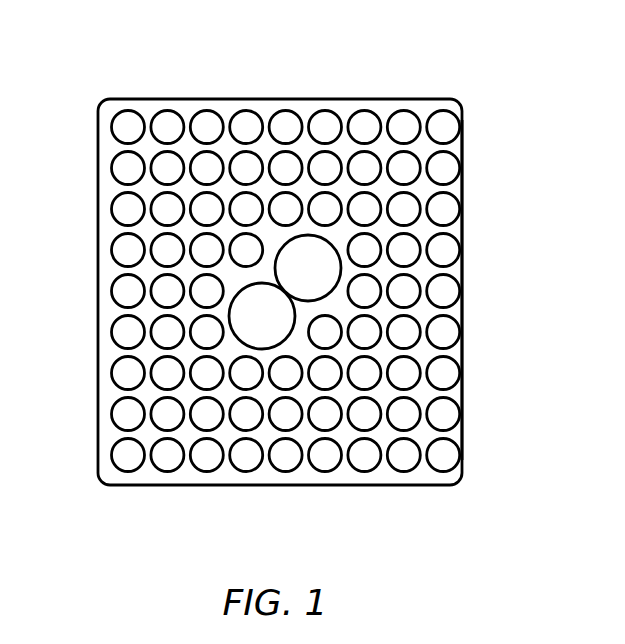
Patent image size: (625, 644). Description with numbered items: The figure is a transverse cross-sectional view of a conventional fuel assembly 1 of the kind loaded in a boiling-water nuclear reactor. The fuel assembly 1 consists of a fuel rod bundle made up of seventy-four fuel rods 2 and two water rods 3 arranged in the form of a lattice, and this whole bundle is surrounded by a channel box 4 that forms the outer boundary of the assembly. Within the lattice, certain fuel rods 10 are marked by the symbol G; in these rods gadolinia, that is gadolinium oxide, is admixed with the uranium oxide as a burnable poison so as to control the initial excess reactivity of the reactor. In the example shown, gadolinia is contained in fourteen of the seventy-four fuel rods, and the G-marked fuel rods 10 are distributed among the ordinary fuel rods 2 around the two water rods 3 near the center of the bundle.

The fuel assembly 1 is at (308, 290).
The fuel rods 2 is at (462, 178).
The water rods 3 is at (340, 256).
The channel box 4 is at (462, 267).
The fuel rods containing gadolinia 10 is at (412, 195).
The gadolinia-containing fuel rod symbol G is at (207, 168).